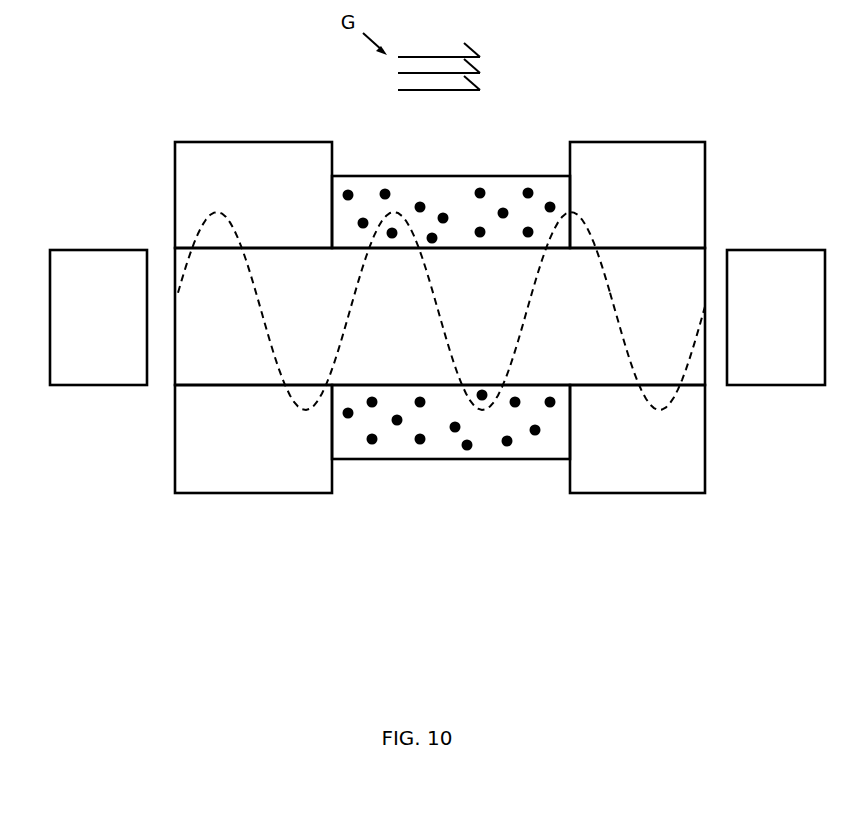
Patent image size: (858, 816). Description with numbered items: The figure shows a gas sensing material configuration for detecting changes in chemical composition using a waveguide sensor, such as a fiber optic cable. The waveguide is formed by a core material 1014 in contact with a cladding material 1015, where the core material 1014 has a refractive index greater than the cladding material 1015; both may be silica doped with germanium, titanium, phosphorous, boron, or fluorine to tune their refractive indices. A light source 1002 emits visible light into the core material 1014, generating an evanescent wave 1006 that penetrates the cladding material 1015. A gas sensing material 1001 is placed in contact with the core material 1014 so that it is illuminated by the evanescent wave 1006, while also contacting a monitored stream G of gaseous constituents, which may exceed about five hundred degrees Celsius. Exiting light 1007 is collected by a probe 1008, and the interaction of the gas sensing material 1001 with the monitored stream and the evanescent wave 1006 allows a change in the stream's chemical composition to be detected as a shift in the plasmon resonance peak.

The gas sensing material 1001 is at (407, 195).
The light source 1002 is at (98, 317).
The evanescent wave 1006 is at (188, 273).
The exiting light 1007 is at (693, 348).
The probe 1008 is at (776, 317).
The core material 1014 is at (207, 350).
The cladding material 1015 is at (217, 160).